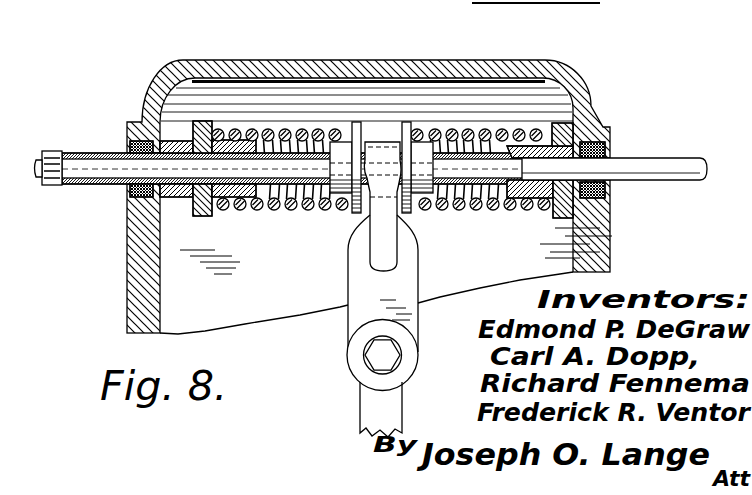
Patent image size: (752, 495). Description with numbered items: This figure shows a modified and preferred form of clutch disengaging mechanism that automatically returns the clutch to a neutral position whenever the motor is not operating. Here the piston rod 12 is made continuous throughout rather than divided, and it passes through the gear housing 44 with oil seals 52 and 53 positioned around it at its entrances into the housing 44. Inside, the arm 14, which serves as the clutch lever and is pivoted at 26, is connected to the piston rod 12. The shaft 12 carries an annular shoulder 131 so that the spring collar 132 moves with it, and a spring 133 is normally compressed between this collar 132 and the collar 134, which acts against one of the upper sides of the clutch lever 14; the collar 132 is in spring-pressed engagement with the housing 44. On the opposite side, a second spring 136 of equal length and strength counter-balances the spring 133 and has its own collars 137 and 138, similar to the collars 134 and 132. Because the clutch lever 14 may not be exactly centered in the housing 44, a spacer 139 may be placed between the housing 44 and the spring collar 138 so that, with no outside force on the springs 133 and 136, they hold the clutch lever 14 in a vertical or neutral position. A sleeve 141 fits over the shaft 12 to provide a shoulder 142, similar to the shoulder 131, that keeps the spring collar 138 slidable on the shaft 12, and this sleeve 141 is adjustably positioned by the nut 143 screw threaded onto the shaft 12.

The piston rod 12 is at (647, 165).
The arm 14 is at (416, 335).
The pivot 26 is at (346, 353).
The housing 44 is at (201, 45).
The oil seal 52 is at (128, 193).
The oil seal 53 is at (612, 148).
The annular shoulder 131 is at (513, 150).
The spring collar 132 is at (538, 134).
The spring 133 is at (447, 133).
The collar 134 is at (408, 123).
The spring 136 is at (268, 133).
The collar 137 is at (356, 123).
The spring collar 138 is at (203, 122).
The spacer 139 is at (172, 140).
The sleeve 141 is at (93, 153).
The shoulder 142 is at (258, 205).
The nut 143 is at (50, 186).